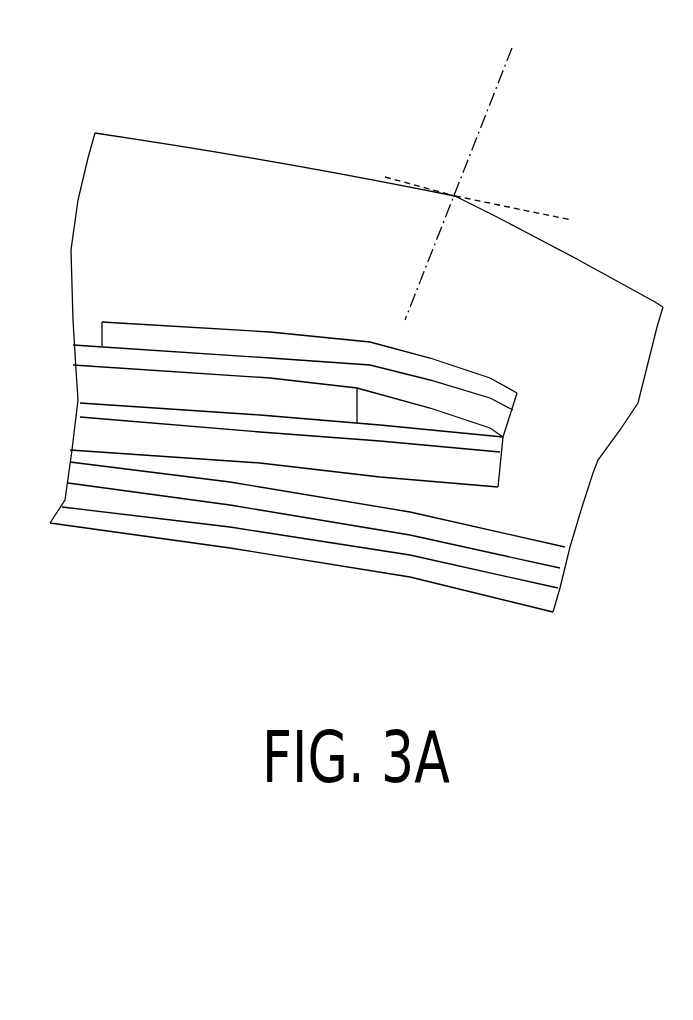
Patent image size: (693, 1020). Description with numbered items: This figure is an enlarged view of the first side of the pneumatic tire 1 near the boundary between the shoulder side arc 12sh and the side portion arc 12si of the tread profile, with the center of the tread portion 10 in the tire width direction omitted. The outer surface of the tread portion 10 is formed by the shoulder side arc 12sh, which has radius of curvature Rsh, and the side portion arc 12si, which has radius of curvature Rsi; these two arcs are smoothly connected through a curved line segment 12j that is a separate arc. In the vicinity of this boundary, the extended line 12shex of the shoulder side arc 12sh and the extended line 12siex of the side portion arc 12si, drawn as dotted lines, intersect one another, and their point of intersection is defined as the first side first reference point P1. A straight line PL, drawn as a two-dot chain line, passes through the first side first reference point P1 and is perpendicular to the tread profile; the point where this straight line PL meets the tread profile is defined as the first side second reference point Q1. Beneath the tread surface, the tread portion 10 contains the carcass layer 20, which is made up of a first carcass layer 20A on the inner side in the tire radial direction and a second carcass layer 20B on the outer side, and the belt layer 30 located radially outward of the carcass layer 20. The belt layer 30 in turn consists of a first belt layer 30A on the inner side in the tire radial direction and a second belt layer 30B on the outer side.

The pneumatic tire 1 is at (603, 80).
The tread portion 10 is at (140, 238).
The shoulder side arc 12sh is at (163, 137).
The side portion arc 12si is at (618, 277).
The extended line of the shoulder side arc 12shex is at (412, 180).
The extended line of the side portion arc 12siex is at (573, 219).
The curved line segment 12j is at (432, 202).
The straight line PL is at (502, 50).
The first side first reference point P1 is at (458, 193).
The first side second reference point Q1 is at (454, 218).
The carcass layer 20 is at (313, 568).
The first carcass layer 20A is at (247, 518).
The second carcass layer 20B is at (288, 505).
The belt layer 30 is at (350, 404).
The first belt layer 30A is at (488, 470).
The second belt layer 30B is at (337, 407).